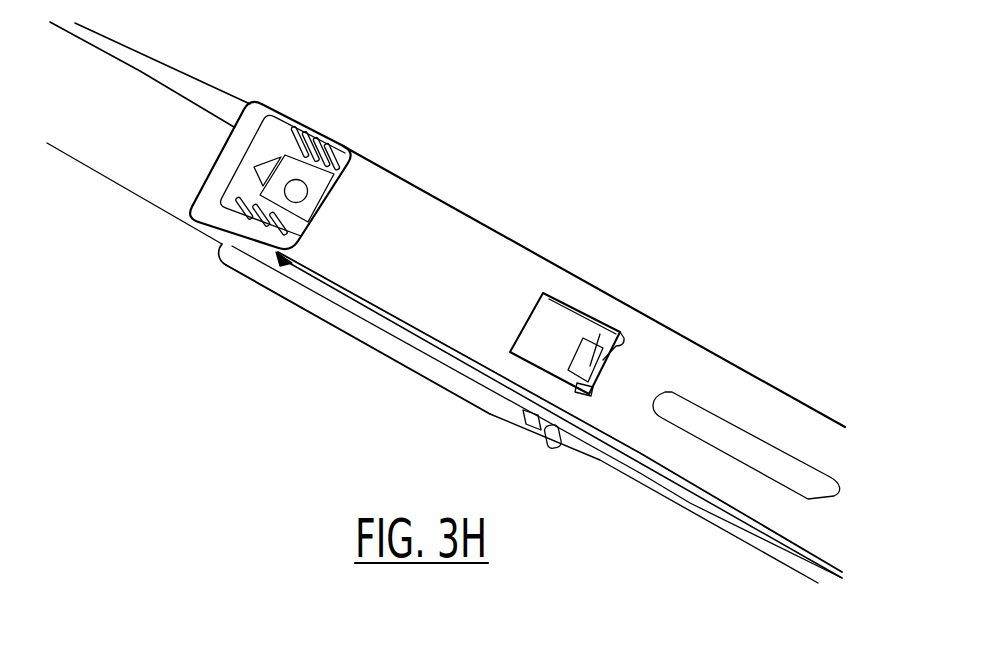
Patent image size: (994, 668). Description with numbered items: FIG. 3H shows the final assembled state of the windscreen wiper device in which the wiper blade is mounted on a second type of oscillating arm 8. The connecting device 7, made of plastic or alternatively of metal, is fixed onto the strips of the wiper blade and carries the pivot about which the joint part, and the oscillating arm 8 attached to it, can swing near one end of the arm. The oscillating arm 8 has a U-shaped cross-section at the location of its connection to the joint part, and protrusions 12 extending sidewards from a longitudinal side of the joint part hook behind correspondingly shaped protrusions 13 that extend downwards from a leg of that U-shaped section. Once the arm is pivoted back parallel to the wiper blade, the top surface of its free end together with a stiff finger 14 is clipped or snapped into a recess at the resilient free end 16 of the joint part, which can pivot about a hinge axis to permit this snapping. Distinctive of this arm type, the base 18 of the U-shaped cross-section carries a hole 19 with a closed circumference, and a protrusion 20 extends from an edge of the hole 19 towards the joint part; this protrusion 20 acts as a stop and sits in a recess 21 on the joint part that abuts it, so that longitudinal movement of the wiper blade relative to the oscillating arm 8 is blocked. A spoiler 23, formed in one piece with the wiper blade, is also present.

The connecting device 7 is at (352, 340).
The oscillating arm 8 is at (715, 372).
The protrusions 12 is at (552, 448).
The protrusion 13 is at (528, 410).
The stiff finger 14 is at (312, 132).
The free end 16 is at (271, 127).
The base 18 is at (455, 240).
The hole 19 is at (568, 307).
The protrusion 20 is at (612, 362).
The recess 21 is at (608, 337).
The spoiler 23 is at (157, 105).